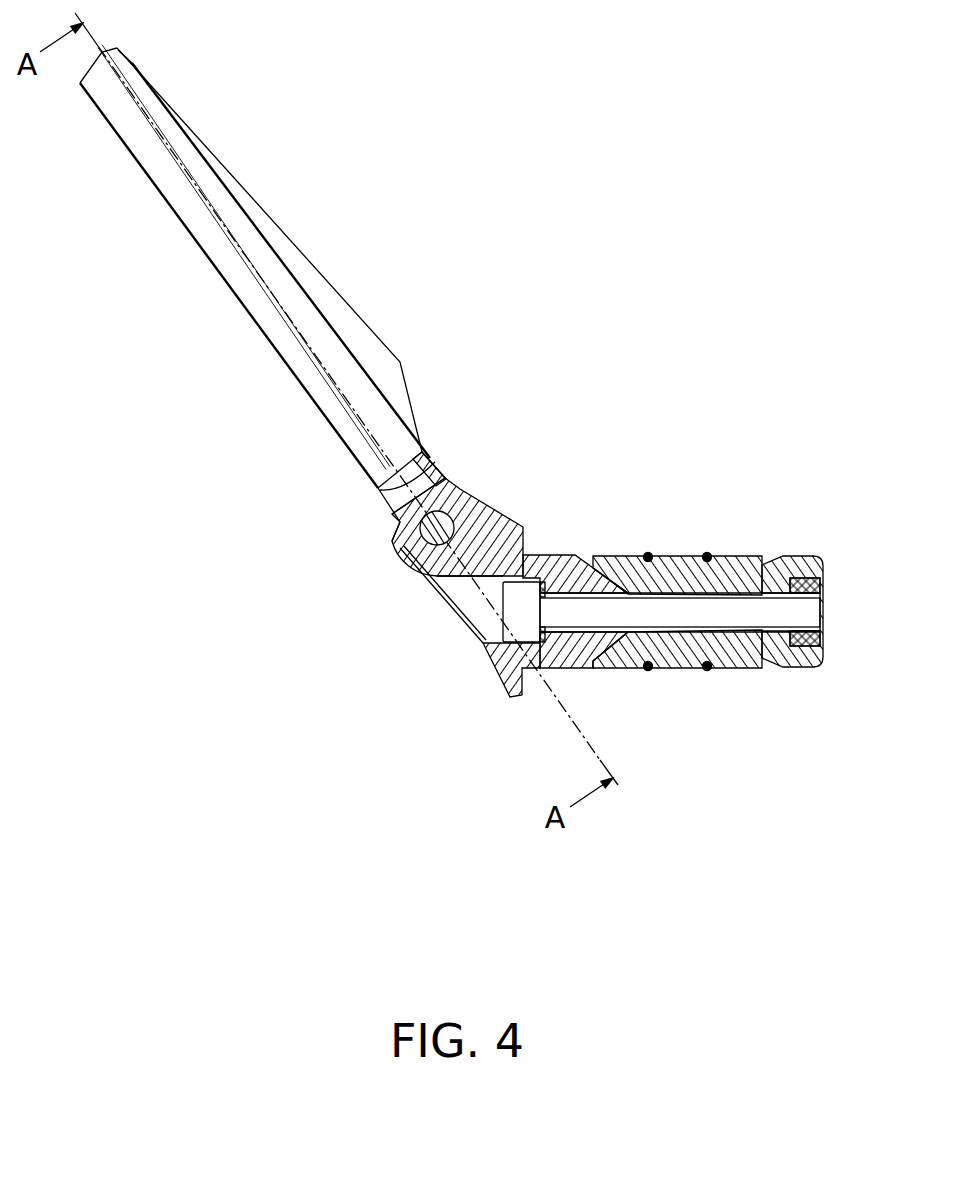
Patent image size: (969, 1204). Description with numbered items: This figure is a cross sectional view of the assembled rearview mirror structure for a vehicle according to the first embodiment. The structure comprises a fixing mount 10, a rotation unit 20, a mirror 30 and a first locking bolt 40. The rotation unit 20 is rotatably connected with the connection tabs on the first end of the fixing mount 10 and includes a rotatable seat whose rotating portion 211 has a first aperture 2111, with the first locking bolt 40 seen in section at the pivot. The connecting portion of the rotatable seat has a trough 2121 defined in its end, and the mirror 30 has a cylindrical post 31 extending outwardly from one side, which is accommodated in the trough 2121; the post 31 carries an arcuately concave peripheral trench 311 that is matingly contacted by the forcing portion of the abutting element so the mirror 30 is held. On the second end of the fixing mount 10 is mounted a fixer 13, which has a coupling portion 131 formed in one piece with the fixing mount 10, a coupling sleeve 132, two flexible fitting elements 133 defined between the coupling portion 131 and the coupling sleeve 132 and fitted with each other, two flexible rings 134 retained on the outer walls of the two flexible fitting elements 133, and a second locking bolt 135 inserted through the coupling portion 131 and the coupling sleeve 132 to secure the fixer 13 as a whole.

The fixing mount 10 is at (493, 662).
The fixer 13 is at (677, 605).
The coupling portion 131 is at (567, 578).
The coupling sleeve 132 is at (798, 560).
The flexible fitting elements 133 is at (625, 565).
The flexible rings 134 is at (709, 556).
The second locking bolt 135 is at (743, 610).
The rotation unit 20 is at (397, 543).
The rotating portion 211 is at (410, 550).
The first aperture 2111 is at (437, 546).
The trough 2121 is at (420, 482).
The mirror 30 is at (263, 203).
The post 31 is at (405, 503).
The peripheral trench 311 is at (395, 513).
The first locking bolt 40 is at (452, 517).